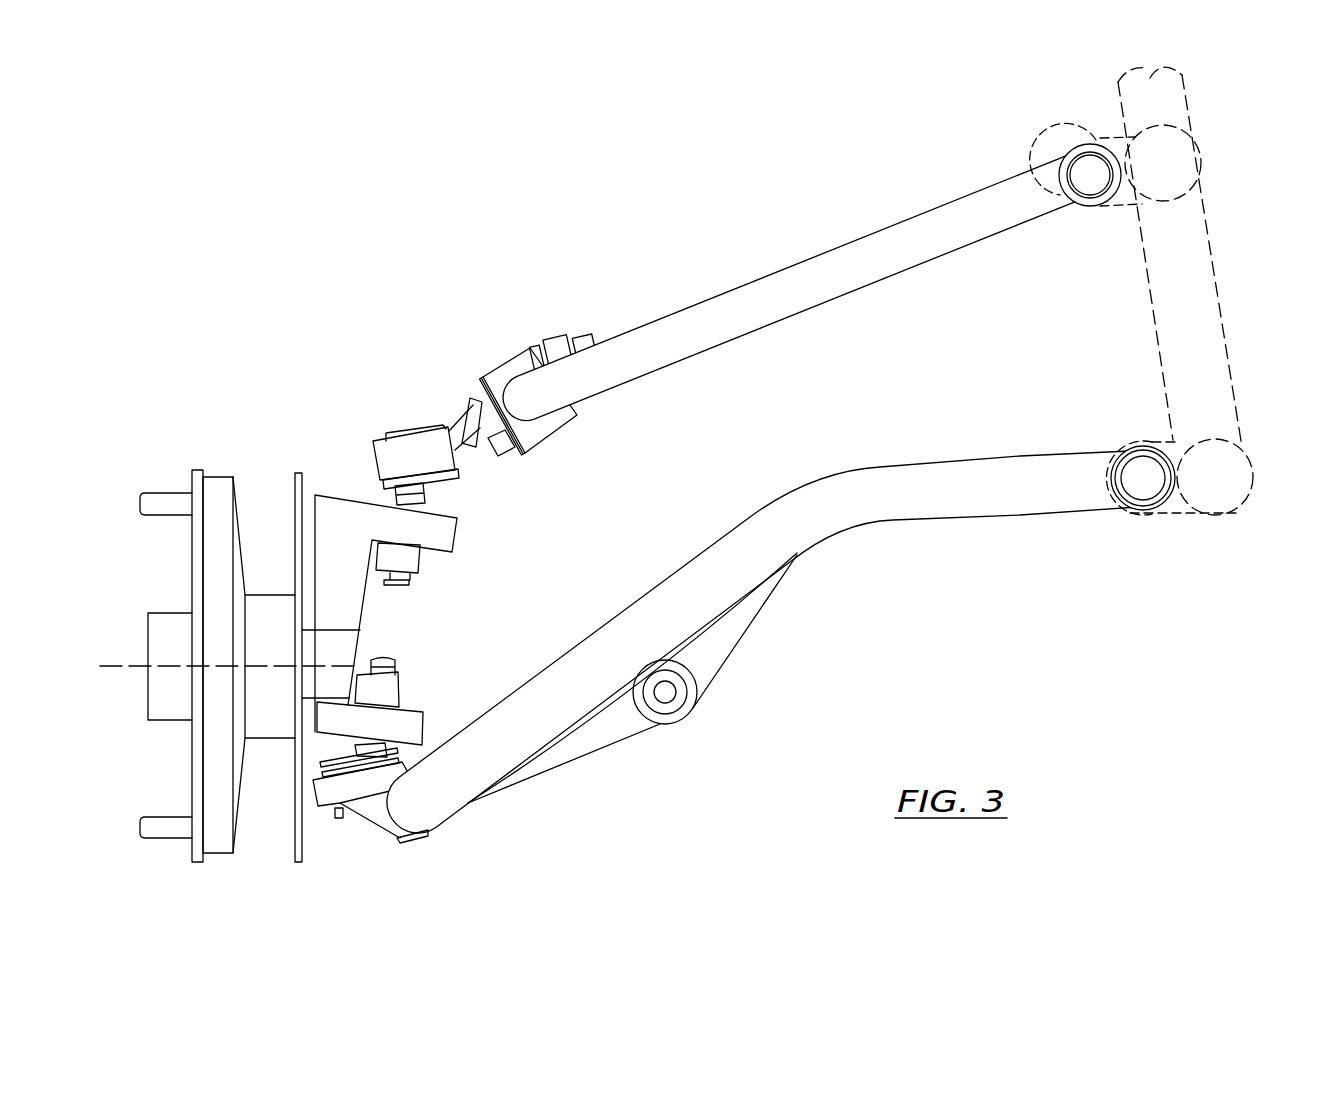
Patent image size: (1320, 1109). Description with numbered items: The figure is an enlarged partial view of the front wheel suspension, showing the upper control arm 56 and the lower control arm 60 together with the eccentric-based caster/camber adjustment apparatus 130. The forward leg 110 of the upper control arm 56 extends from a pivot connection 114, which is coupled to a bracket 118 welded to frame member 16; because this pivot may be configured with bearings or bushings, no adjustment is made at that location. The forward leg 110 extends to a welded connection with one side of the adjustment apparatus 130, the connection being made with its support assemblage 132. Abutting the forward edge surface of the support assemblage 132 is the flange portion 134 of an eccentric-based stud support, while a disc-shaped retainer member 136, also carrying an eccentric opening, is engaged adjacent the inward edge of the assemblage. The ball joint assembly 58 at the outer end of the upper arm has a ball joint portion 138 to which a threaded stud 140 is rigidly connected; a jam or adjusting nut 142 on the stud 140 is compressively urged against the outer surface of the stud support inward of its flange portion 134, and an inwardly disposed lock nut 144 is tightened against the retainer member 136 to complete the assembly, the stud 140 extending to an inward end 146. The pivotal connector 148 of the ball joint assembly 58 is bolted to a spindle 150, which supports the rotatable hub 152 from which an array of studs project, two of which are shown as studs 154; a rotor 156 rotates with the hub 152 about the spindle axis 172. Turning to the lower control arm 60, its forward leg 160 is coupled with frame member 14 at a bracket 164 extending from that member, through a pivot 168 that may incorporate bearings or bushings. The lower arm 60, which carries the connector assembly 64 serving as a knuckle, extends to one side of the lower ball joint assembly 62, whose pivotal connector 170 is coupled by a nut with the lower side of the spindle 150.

The frame member 14 is at (1240, 477).
The frame member 16 is at (1176, 153).
The upper control arm 56 is at (822, 260).
The ball joint assembly 58 is at (418, 449).
The lower control arm 60 is at (811, 615).
The ball joint assembly 62 is at (378, 835).
The connector assembly 64 is at (687, 703).
The forward leg 110 is at (942, 226).
The pivot connection 114 is at (1097, 204).
The bracket 118 is at (1116, 138).
The eccentric-based caster/camber adjustment apparatus 130 is at (522, 388).
The support assemblage 132 is at (555, 436).
The flange portion 134 is at (475, 400).
The disc-shaped retainer member 136 is at (542, 347).
The ball joint portion 138 is at (372, 459).
The threaded stud 140 is at (474, 454).
The jam or adjusting nut 142 is at (468, 405).
The lock nut 144 is at (552, 341).
The inward end 146 is at (592, 339).
The pivotal connector 148 is at (422, 500).
The spindle 150 is at (350, 605).
The hub 152 is at (220, 483).
The studs 154 is at (158, 500).
The rotor 156 is at (297, 866).
The forward leg 160 is at (997, 467).
The bracket 164 is at (1173, 507).
The pivot 168 is at (1142, 476).
The pivotal connector 170 is at (395, 688).
The spindle axis 172 is at (124, 667).